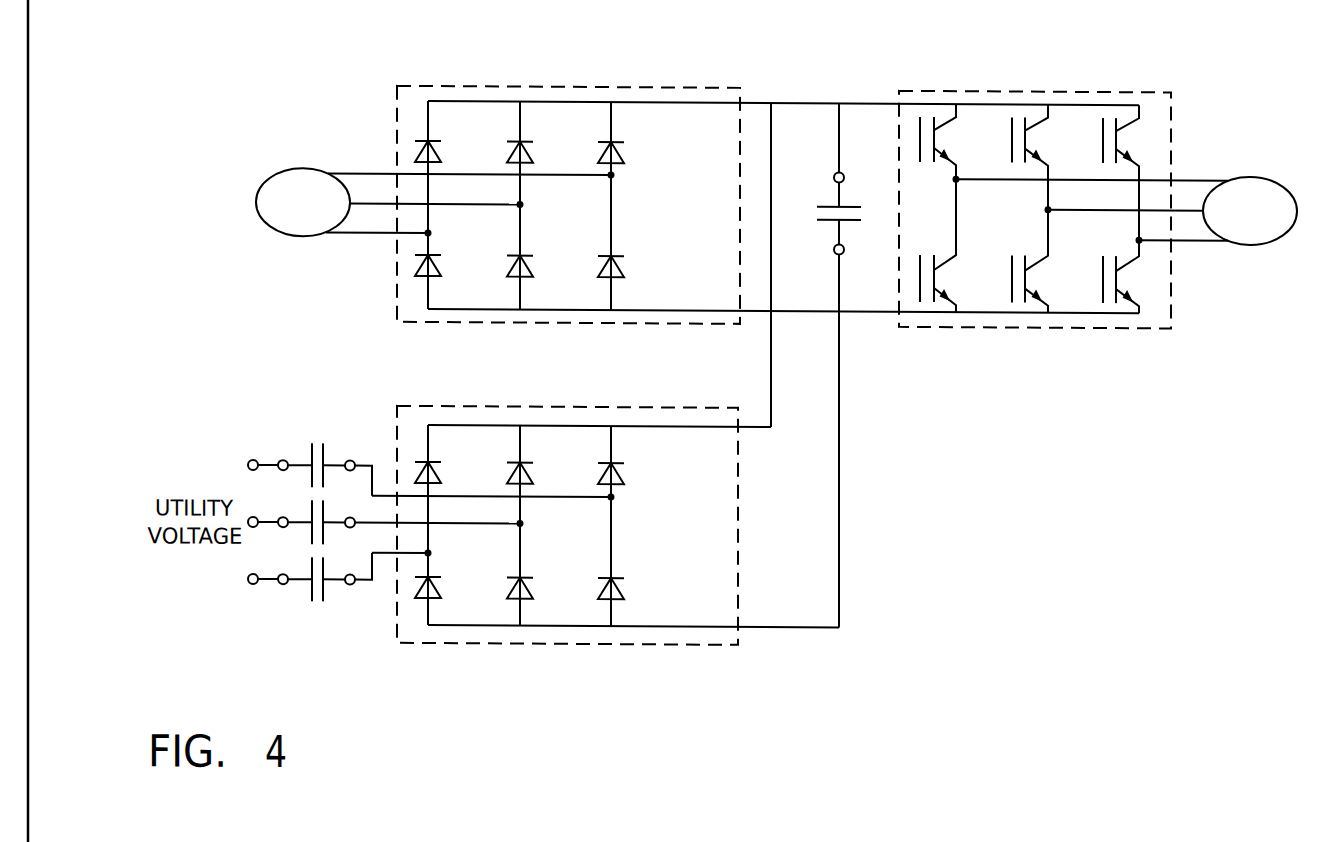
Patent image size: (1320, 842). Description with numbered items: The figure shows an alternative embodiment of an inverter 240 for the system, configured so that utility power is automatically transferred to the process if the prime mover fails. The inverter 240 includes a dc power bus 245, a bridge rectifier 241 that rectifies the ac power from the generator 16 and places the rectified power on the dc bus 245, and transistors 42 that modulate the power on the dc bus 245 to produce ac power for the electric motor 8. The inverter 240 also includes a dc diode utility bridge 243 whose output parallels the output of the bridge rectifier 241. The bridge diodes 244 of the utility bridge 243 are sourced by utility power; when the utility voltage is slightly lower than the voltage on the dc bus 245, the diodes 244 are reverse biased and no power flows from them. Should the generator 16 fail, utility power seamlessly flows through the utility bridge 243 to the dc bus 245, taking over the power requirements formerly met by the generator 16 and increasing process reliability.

The generator 16 is at (313, 169).
The bridge rectifier 241 is at (467, 86).
The dc power bus 245 is at (798, 101).
The transistors 42 is at (1027, 141).
The electric motor 8 is at (1248, 172).
The bridge diodes 244 is at (437, 470).
The dc diode utility bridge 243 is at (618, 539).
The inverter 240 is at (937, 624).